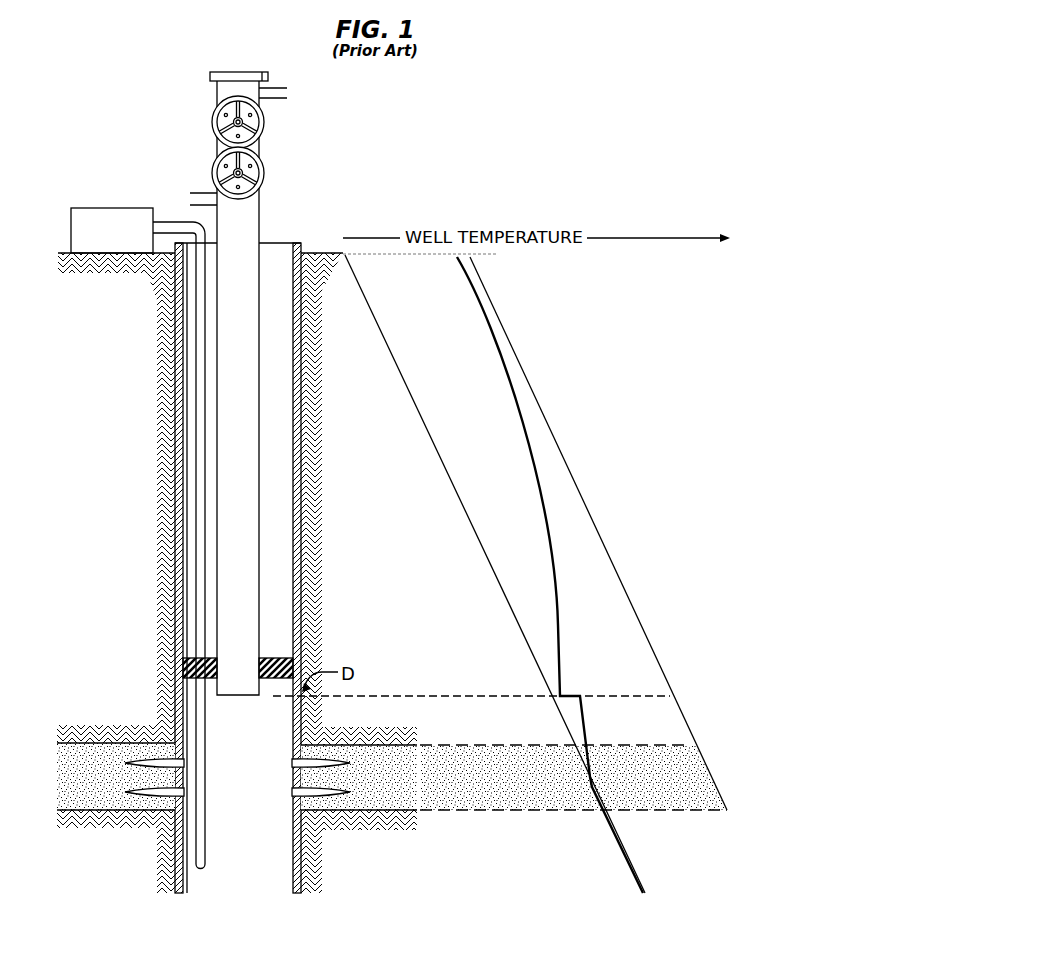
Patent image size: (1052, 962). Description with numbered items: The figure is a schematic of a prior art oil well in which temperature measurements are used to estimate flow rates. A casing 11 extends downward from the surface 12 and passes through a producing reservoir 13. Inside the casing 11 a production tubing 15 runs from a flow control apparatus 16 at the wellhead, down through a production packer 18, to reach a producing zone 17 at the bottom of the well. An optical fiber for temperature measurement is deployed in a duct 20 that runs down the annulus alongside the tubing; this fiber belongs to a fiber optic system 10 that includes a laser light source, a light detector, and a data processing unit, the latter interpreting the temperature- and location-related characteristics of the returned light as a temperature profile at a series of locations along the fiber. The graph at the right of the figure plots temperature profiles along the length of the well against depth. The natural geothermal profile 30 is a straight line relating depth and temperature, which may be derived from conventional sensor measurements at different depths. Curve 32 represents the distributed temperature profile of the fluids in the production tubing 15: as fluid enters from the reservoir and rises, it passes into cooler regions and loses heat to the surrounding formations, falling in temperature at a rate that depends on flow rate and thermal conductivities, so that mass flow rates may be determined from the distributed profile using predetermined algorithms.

The fiber optic system 10 is at (97, 241).
The casing 11 is at (175, 418).
The surface 12 is at (314, 253).
The producing reservoir 13 is at (86, 789).
The production tubing 15 is at (225, 488).
The flow control apparatus 16 is at (200, 135).
The producing zone 17 is at (226, 849).
The production packer 18 is at (283, 658).
The duct 20 is at (184, 577).
The natural geothermal profile 30 is at (445, 466).
The curve 32 is at (558, 623).